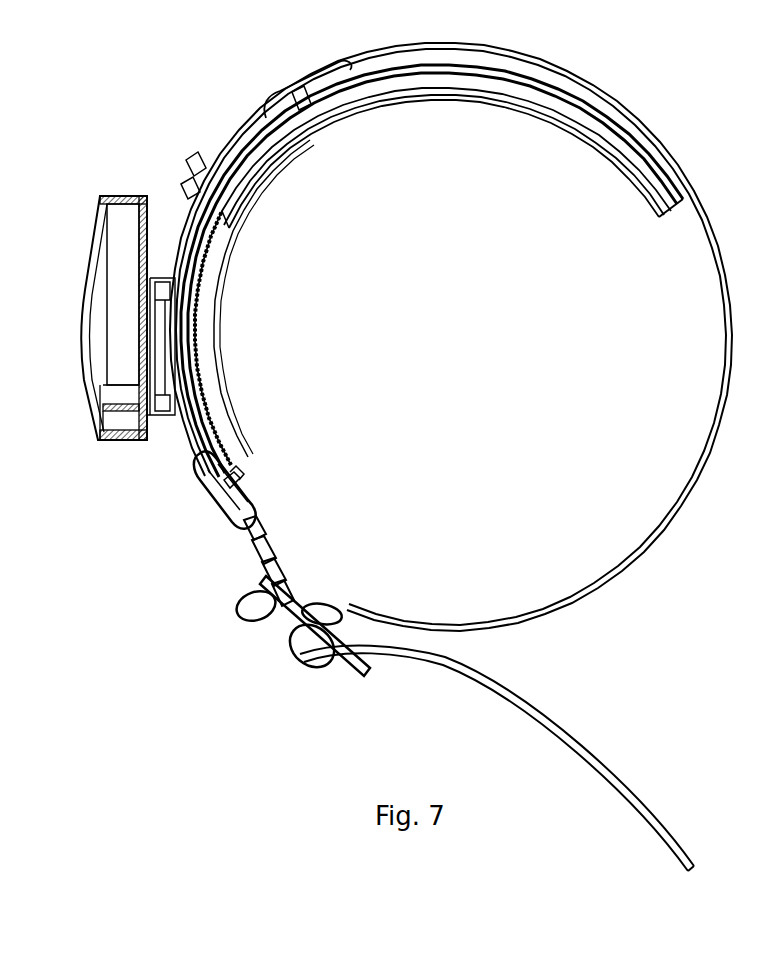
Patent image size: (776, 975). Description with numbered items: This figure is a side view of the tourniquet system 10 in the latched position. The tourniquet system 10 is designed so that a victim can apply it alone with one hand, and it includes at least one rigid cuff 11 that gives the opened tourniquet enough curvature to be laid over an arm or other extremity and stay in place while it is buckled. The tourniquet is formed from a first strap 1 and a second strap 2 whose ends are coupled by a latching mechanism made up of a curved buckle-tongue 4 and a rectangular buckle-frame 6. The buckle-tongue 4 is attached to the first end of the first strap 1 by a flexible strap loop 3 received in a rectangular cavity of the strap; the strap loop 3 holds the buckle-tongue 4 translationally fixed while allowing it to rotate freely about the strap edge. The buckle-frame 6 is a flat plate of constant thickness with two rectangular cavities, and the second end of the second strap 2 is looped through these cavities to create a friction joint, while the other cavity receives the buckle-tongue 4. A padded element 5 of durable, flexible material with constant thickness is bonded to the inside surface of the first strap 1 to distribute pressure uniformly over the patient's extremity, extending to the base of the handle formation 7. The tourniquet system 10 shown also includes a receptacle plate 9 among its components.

The first strap 1 is at (187, 231).
The second strap 2 is at (594, 594).
The strap loop 3 is at (212, 492).
The buckle-tongue 4 is at (240, 540).
The padded element 5 is at (568, 132).
The buckle-frame 6 is at (358, 670).
The handle formation 7 is at (118, 197).
The receptacle plate 9 is at (233, 128).
The tourniquet system 10 is at (712, 137).
The rigid cuff 11 is at (203, 238).